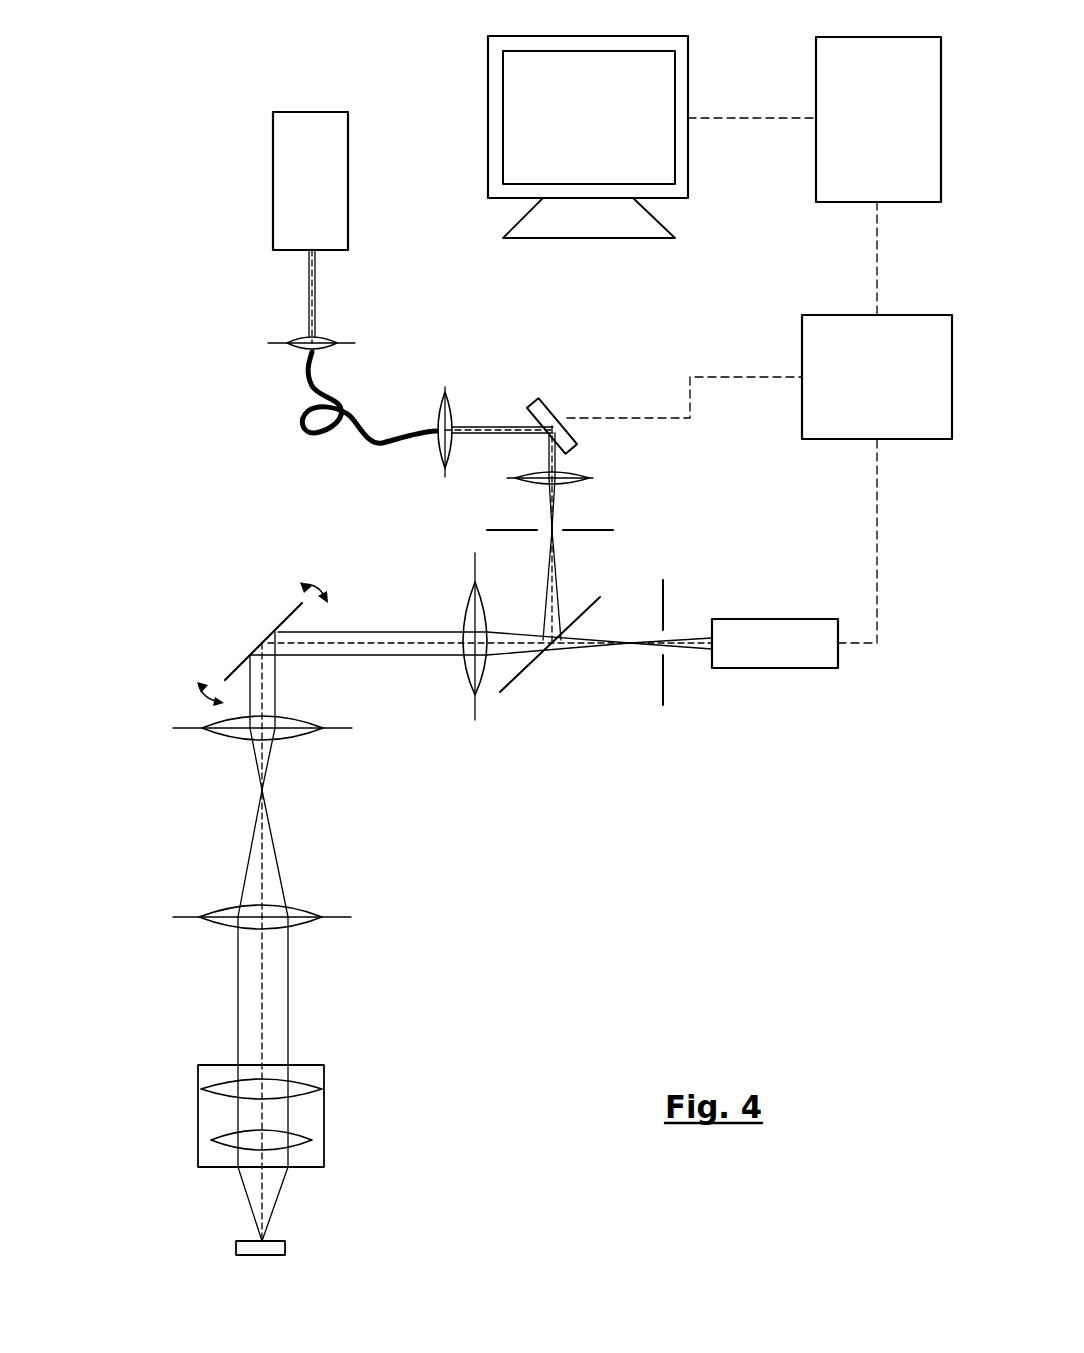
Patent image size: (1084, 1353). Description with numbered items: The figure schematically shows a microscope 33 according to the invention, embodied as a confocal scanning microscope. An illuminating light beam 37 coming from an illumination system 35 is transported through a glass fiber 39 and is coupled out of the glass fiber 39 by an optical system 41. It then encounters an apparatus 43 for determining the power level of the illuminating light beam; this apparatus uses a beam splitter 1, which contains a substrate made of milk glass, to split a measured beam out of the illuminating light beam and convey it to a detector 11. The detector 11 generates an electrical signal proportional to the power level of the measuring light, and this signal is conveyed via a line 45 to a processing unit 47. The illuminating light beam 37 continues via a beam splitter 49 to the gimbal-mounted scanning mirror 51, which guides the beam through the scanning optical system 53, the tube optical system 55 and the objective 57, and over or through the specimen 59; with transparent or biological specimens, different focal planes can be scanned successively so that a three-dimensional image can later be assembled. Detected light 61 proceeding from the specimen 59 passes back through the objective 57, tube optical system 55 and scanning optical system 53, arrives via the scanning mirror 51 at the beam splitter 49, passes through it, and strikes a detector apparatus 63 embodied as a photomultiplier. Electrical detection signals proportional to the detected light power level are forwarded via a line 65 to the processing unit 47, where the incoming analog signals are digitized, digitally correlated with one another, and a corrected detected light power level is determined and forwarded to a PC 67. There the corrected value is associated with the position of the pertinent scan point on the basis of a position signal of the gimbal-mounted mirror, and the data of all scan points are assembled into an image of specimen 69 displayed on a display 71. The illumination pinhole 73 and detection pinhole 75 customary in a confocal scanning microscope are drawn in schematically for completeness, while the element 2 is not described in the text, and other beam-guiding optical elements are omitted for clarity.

The beam splitter 1 is at (569, 421).
The focusing lens 2 is at (537, 477).
The detector 11 is at (576, 433).
The microscope 33 is at (187, 437).
The illumination system 35 is at (302, 163).
The illuminating light beam 37 is at (308, 323).
The glass fiber 39 is at (327, 437).
The optical system 41 is at (443, 420).
The apparatus for determining the power level of the illuminating light beam 43 is at (547, 368).
The line 45 is at (690, 390).
The processing unit 47 is at (832, 355).
The beam splitter 49 is at (525, 667).
The gimbal-mounted scanning mirror 51 is at (226, 679).
The scanning optical system 53 is at (227, 723).
The tube optical system 55 is at (225, 911).
The objective 57 is at (298, 1115).
The specimen 59 is at (266, 1247).
The detected light 61 is at (607, 650).
The detector apparatus 63 is at (762, 655).
The line 65 is at (877, 562).
The PC 67 is at (828, 175).
The image of specimen 69 is at (527, 87).
The display 71 is at (538, 227).
The illumination pinhole 73 is at (583, 530).
The detection pinhole 75 is at (665, 677).